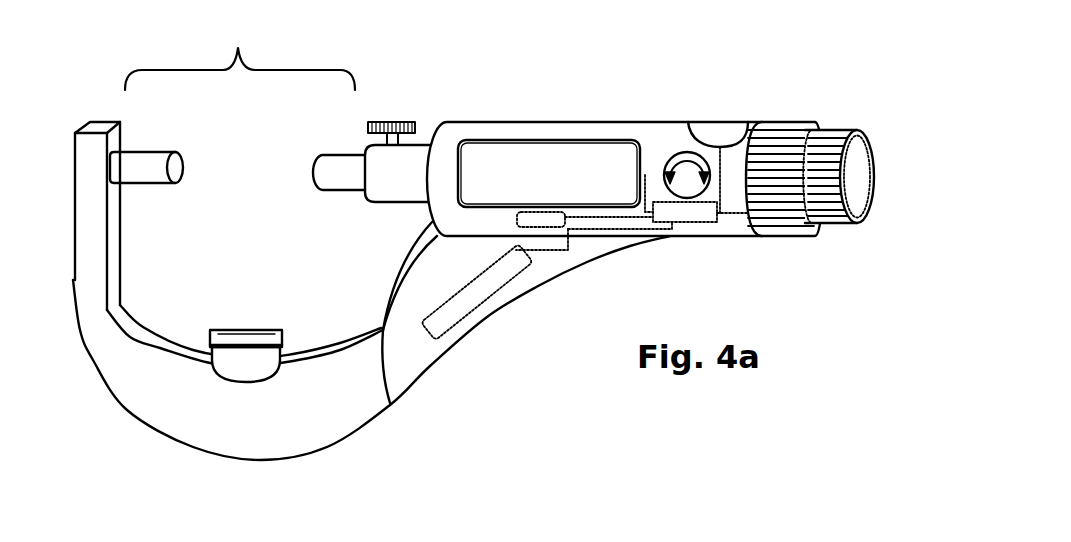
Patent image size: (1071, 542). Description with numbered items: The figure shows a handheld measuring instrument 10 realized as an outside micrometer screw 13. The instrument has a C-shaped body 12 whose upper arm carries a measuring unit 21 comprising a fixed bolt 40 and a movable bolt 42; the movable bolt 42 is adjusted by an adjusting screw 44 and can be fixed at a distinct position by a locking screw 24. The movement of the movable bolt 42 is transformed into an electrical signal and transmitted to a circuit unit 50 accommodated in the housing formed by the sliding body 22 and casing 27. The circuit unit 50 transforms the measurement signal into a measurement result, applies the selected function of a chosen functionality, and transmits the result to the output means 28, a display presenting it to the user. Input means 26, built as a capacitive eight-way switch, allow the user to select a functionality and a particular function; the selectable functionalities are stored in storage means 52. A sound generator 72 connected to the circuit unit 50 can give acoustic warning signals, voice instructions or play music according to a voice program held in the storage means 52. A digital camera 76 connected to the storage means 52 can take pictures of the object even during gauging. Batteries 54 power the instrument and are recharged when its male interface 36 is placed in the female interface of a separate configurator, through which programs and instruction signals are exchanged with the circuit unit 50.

The handheld measuring instrument 10 is at (487, 254).
The outside micrometer screw 13 is at (482, 101).
The elongated body 12 is at (355, 408).
The measuring unit 21 is at (240, 54).
The sliding body 22 is at (614, 167).
The casing 27 is at (552, 128).
The locking screw 24 is at (389, 121).
The input means 26 is at (685, 162).
The output means 28 is at (605, 155).
The male interface 36 is at (855, 180).
The fixed bolt 40 is at (152, 170).
The movable bolt 42 is at (328, 165).
The adjusting screw 44 is at (782, 227).
The circuit unit 50 is at (687, 212).
The storage means 52 is at (543, 223).
The batteries 54 is at (467, 302).
The sound generator 72 is at (722, 132).
The digital camera 76 is at (255, 368).